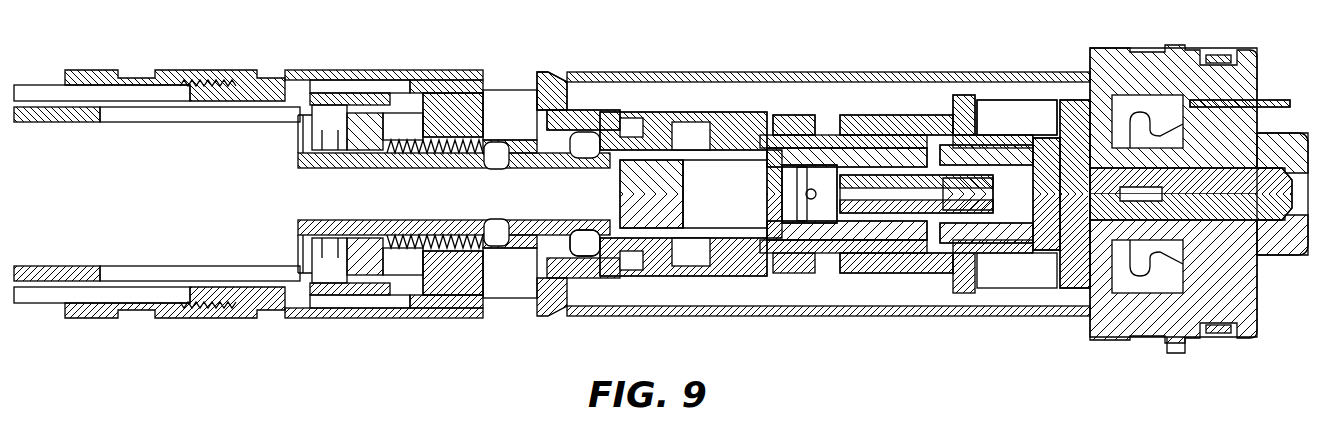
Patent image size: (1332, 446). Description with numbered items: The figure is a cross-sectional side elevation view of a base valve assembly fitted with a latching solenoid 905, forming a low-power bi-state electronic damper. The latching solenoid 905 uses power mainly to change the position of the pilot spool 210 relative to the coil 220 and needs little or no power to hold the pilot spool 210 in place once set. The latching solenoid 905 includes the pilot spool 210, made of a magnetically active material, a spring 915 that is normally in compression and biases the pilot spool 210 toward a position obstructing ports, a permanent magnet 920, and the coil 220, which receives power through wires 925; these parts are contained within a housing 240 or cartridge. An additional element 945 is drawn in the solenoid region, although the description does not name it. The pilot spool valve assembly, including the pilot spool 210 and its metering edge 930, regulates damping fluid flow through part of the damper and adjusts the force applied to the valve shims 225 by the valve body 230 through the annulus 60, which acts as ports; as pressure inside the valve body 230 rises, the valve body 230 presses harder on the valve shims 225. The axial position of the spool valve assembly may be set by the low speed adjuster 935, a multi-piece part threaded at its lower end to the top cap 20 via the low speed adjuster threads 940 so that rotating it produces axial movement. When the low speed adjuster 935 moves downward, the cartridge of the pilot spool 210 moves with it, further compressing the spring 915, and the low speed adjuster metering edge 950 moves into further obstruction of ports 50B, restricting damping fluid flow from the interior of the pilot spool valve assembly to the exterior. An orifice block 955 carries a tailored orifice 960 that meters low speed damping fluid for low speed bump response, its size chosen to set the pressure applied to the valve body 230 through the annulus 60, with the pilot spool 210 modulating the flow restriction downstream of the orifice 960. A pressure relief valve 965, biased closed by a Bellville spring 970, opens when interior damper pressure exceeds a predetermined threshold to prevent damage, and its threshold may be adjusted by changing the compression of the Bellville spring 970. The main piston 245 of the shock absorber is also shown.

The top cap 20 is at (1247, 130).
The ports 50B is at (826, 240).
The annulus 60 is at (697, 237).
The pilot spool 210 is at (907, 245).
The coil 220 is at (967, 242).
The valve shims 225 is at (612, 255).
The valve body 230 is at (703, 100).
The housing 240 is at (882, 260).
The main piston 245 is at (587, 95).
The latching solenoid 905 is at (1000, 150).
The spring 915 is at (1028, 158).
The permanent magnet 920 is at (1040, 260).
The wires 925 is at (1268, 100).
The metering edge 930 is at (843, 240).
The low speed adjuster 935 is at (1218, 186).
The low speed adjuster threads 940 is at (1130, 240).
The ring 945 is at (922, 128).
The low speed adjuster metering edge 950 is at (829, 142).
The orifice block 955 is at (635, 118).
The orifice 960 is at (648, 237).
The pressure relief valve 965 is at (445, 150).
The Bellville spring 970 is at (427, 252).